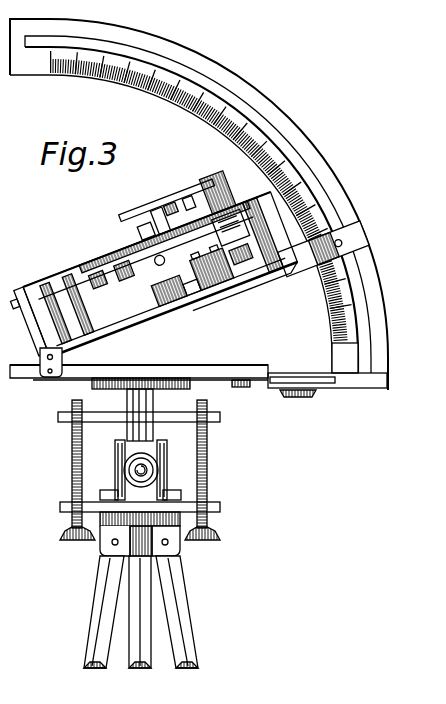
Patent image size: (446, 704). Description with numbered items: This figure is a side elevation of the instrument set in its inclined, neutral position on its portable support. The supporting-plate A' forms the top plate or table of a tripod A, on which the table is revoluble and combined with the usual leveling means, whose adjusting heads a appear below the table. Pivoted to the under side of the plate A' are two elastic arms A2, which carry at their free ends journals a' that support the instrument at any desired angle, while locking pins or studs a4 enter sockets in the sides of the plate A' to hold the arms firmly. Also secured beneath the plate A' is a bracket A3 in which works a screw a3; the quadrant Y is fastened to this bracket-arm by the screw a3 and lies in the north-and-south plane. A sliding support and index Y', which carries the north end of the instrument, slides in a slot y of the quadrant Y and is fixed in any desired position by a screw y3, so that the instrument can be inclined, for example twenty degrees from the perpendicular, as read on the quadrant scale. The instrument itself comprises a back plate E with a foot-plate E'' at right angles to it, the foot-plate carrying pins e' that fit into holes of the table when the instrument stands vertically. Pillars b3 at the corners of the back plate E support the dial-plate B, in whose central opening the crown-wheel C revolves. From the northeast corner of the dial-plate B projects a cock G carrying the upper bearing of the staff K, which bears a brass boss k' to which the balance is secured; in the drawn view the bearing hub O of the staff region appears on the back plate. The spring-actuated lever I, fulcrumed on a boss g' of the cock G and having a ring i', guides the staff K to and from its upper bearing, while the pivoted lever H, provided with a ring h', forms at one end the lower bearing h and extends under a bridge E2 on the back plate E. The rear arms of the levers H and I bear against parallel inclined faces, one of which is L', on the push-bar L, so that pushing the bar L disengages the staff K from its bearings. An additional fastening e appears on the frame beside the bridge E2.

The quadrant Y is at (199, 204).
The slot of the quadrant y is at (291, 158).
The sliding support and index Y' is at (187, 211).
The screw y3 is at (343, 241).
The back plate E is at (160, 274).
The pillars b3 is at (80, 318).
The crown-wheel C is at (92, 273).
The dial-plate B is at (112, 268).
The end plate E'' is at (40, 308).
The pins e' is at (12, 300).
The staff K is at (142, 234).
The pivot stud O is at (148, 280).
The spring-actuated lever I is at (162, 220).
The boss g' is at (175, 194).
The ring i' is at (193, 190).
The cock G is at (230, 212).
The push-bar L is at (231, 233).
The boss or enlargement k' is at (241, 257).
The inclined face L' is at (267, 234).
The bridge E2 is at (165, 325).
The pin e is at (191, 313).
The pivoted lever H is at (250, 298).
The ring h' is at (202, 294).
The bearing h is at (220, 280).
The plate A' is at (198, 367).
The journals a' is at (35, 357).
The locking pins or studs a4 is at (48, 374).
The plate or bracket A3 is at (257, 387).
The screw a3 is at (303, 398).
The arms A2 is at (191, 386).
The leveling screw heads a is at (137, 532).
The tripod stand A is at (139, 534).